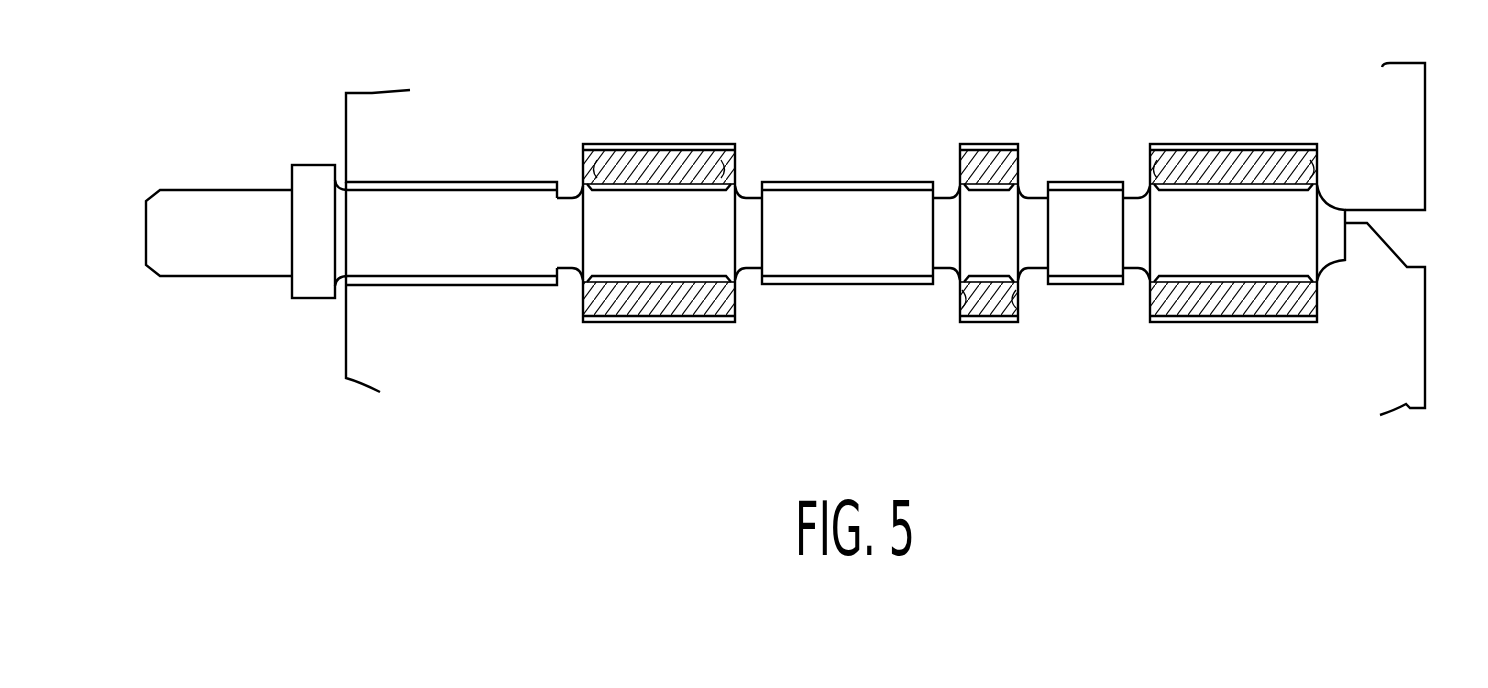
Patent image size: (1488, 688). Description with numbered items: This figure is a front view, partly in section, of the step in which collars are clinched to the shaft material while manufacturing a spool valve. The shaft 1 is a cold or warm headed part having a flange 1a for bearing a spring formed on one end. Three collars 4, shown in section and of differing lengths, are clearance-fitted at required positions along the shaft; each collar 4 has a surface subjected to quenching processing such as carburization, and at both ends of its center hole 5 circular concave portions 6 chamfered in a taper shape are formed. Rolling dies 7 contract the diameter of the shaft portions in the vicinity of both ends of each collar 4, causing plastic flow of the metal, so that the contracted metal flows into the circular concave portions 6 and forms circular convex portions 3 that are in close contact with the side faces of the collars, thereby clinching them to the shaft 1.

The shaft 1 is at (221, 264).
The flange 1a is at (309, 177).
The circular convex portions 3 is at (562, 227).
The collar 4 is at (677, 157).
The center hole 5 is at (656, 190).
The circular concave portions 6 is at (595, 167).
The rolling dies 7 is at (1417, 138).